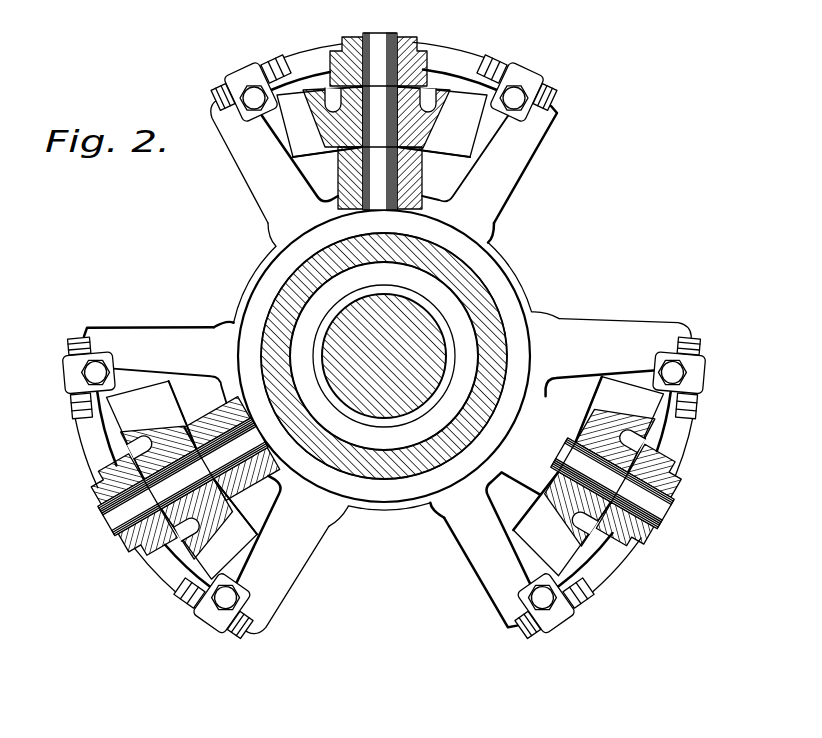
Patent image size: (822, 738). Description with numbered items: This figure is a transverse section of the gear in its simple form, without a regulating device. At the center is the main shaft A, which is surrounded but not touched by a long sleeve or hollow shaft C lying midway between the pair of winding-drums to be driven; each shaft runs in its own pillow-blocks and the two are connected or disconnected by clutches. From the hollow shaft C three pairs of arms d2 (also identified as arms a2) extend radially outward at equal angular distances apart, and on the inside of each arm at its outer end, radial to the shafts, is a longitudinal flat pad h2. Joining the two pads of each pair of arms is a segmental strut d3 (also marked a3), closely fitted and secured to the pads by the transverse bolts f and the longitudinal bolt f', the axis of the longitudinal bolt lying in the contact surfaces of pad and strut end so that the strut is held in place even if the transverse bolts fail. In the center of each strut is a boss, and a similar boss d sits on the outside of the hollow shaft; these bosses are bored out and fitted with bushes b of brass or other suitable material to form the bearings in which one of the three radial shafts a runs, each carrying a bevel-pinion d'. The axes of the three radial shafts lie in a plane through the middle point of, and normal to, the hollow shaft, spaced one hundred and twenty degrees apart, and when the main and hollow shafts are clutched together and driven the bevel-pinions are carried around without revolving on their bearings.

The main shaft A is at (384, 356).
The hollow shaft C is at (384, 356).
The radial shaft a is at (383, 257).
The arm a2 is at (512, 428).
The segmental strut a3 is at (455, 68).
The bush b is at (403, 45).
The boss d is at (573, 462).
The bevel-pinion d' is at (452, 246).
The arm d2 is at (378, 313).
The segmental strut d3 is at (98, 440).
The transverse bolt f is at (375, 348).
The longitudinal bolt f' is at (319, 341).
The flat pad h2 is at (265, 72).